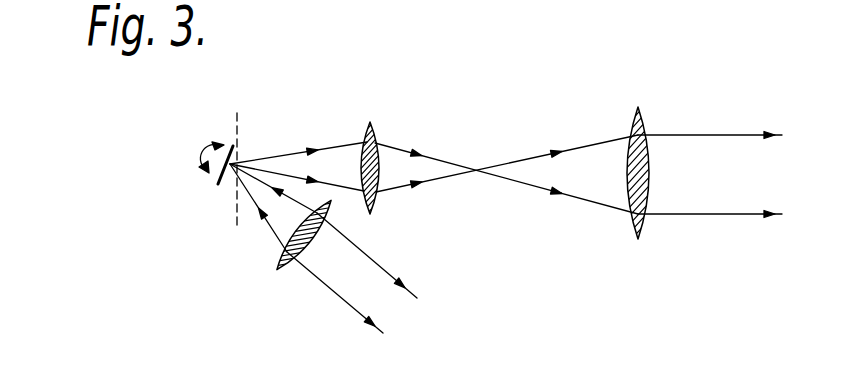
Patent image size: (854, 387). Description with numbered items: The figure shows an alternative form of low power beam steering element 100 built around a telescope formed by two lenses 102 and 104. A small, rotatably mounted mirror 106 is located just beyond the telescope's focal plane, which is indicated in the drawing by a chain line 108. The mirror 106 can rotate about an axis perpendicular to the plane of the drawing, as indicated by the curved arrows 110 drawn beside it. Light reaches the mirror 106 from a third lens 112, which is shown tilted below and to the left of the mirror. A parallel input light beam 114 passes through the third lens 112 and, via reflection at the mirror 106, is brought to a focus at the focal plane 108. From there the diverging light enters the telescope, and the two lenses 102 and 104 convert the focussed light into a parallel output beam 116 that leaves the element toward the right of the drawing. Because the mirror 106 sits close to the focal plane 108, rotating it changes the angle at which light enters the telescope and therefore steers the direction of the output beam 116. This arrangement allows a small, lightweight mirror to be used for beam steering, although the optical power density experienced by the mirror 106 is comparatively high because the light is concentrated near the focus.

The low power beam steering element 100 is at (500, 209).
The lens 102 is at (371, 123).
The lens 104 is at (639, 111).
The mirror 106 is at (218, 184).
The focal plane 108 is at (240, 113).
The arrows 110 is at (201, 150).
The third lens 112 is at (276, 268).
The parallel input light beam 114 is at (417, 326).
The parallel output beam 116 is at (800, 194).